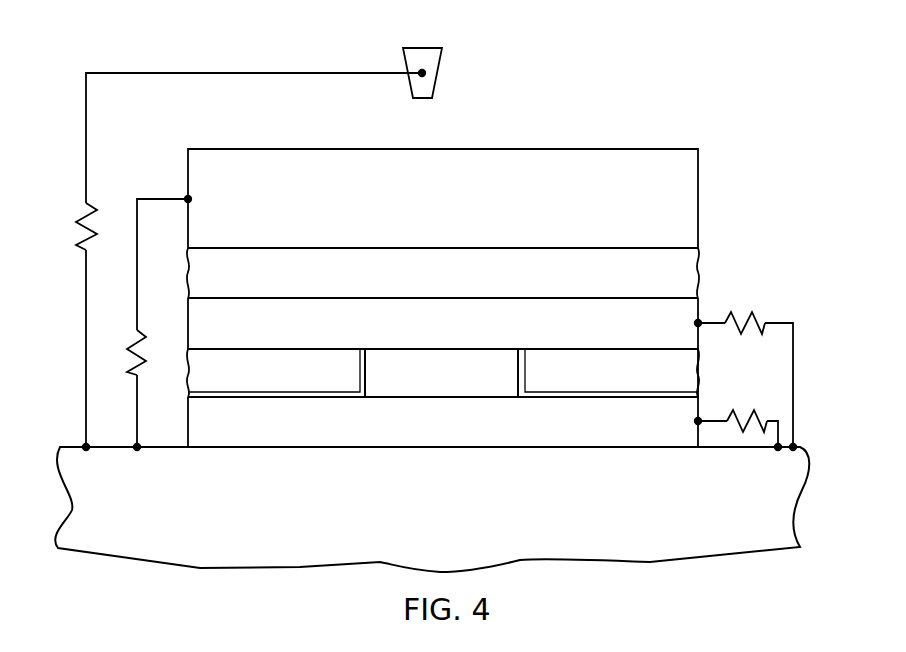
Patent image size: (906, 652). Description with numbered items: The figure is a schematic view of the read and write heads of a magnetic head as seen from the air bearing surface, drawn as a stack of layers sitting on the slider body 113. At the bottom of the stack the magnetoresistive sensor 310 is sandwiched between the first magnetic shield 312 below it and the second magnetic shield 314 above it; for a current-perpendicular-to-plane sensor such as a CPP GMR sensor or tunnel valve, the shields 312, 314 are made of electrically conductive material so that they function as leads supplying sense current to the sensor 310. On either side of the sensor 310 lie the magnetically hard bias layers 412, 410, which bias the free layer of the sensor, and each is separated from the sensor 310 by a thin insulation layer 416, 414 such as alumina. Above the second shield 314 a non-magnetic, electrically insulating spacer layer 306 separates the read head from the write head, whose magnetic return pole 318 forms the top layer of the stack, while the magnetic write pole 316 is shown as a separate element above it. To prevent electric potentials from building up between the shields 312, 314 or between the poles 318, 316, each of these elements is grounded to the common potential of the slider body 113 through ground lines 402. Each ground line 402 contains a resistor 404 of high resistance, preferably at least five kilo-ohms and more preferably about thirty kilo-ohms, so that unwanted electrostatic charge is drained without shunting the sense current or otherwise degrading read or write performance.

The slider body 113 is at (432, 509).
The spacer layer 306 is at (443, 273).
The magnetoresistive sensor 310 is at (441, 373).
The first magnetic shield 312 is at (443, 422).
The second magnetic shield 314 is at (443, 323).
The magnetic write pole 316 is at (432, 62).
The magnetic return pole 318 is at (443, 198).
The ground line 402 is at (232, 73).
The resistor 404 is at (78, 210).
The hard bias layer 410 is at (608, 373).
The hard bias layer 412 is at (276, 373).
The insulation layer 414 is at (558, 397).
The insulation layer 416 is at (352, 397).